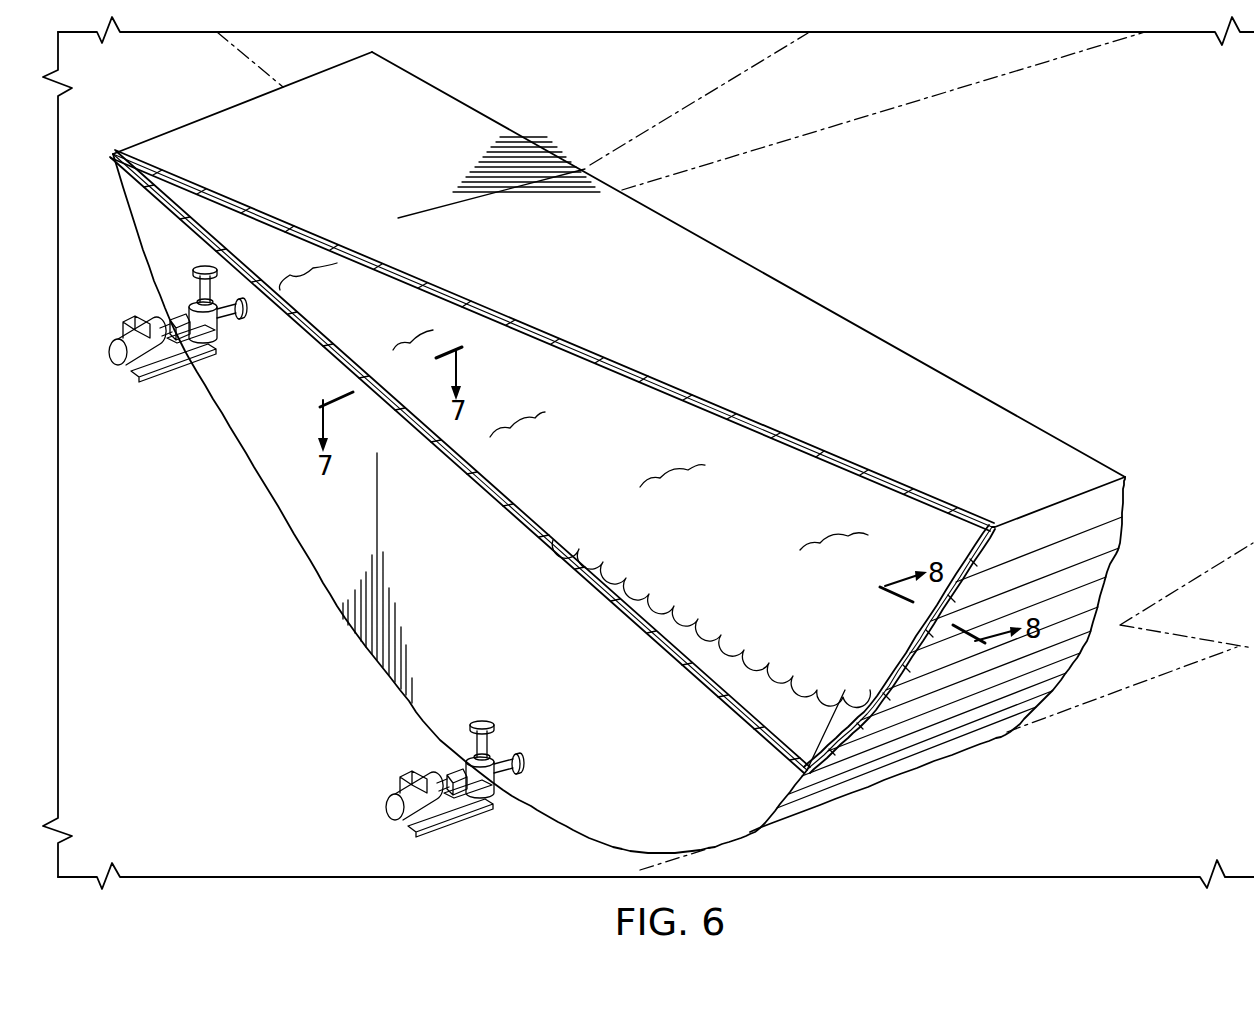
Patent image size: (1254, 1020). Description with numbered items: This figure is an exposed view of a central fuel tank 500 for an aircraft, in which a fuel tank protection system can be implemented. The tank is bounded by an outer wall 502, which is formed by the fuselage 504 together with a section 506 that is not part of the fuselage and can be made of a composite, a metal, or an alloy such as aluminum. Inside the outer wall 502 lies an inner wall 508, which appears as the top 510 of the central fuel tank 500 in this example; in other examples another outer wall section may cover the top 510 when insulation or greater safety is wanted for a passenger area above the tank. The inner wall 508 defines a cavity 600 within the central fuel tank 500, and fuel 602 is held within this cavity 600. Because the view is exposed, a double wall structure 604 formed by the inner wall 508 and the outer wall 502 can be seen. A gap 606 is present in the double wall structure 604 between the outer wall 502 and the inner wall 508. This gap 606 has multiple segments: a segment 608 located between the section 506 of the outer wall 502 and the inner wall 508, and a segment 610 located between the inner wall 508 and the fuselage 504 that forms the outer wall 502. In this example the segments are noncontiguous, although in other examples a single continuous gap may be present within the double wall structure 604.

The central fuel tank 500 is at (880, 228).
The outer wall 502 is at (1072, 448).
The fuselage 504 is at (1070, 710).
The section 506 is at (306, 532).
The inner wall 508 is at (258, 243).
The top 510 is at (908, 362).
The cavity 600 is at (567, 372).
The fuel 602 is at (663, 483).
The double wall structure 604 is at (710, 673).
The gap 606 is at (667, 637).
The segment 608 is at (548, 518).
The segment 610 is at (892, 654).